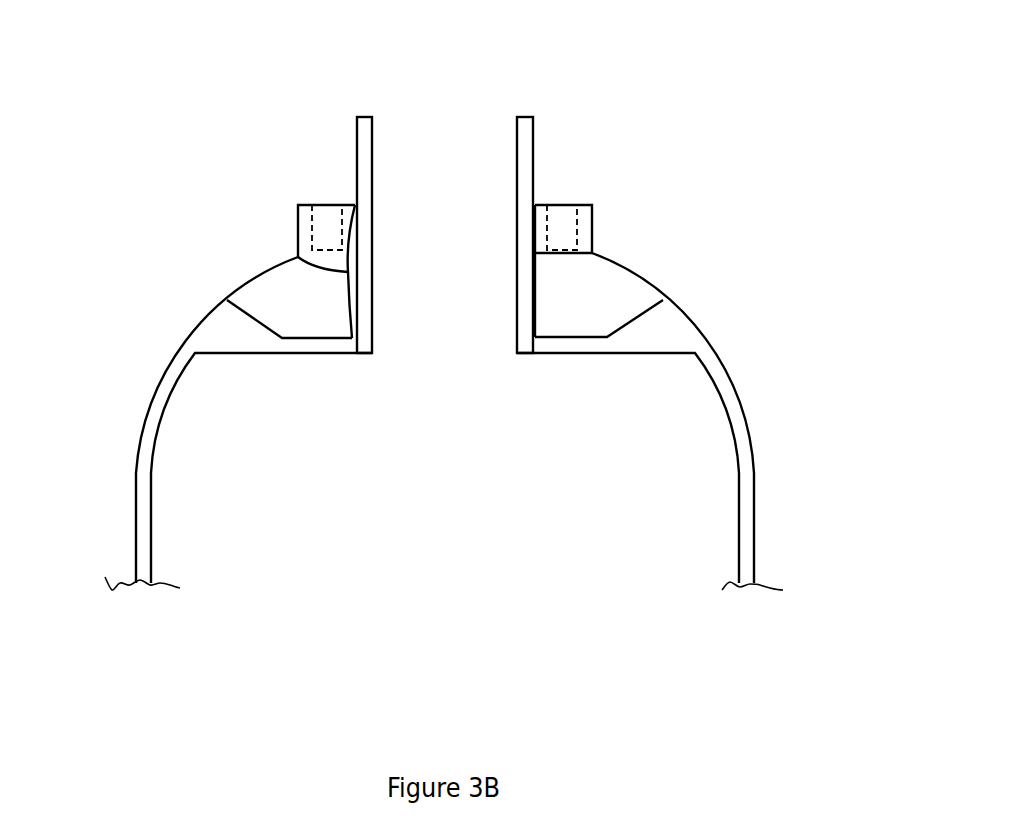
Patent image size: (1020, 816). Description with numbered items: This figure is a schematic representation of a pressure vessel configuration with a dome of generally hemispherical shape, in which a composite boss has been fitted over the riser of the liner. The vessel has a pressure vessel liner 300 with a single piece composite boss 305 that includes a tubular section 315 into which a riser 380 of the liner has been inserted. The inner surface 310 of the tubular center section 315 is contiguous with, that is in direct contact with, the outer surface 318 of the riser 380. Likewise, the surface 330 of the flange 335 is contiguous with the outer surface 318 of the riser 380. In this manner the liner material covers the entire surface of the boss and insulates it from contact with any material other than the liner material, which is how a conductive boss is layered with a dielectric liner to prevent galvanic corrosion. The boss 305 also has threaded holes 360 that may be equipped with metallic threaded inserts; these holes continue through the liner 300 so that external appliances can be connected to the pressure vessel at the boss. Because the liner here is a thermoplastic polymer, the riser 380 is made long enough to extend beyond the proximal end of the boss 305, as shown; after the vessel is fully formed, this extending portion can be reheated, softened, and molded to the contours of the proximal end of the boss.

The pressure vessel liner 300 is at (727, 387).
The single piece composite boss 305 is at (267, 295).
The inner surface 310 is at (352, 297).
The tubular section 315 is at (290, 258).
The outer surface 318 is at (358, 263).
The surface 330 is at (247, 318).
The flange 335 is at (605, 290).
The threaded holes 360 is at (560, 237).
The riser 380 is at (523, 198).